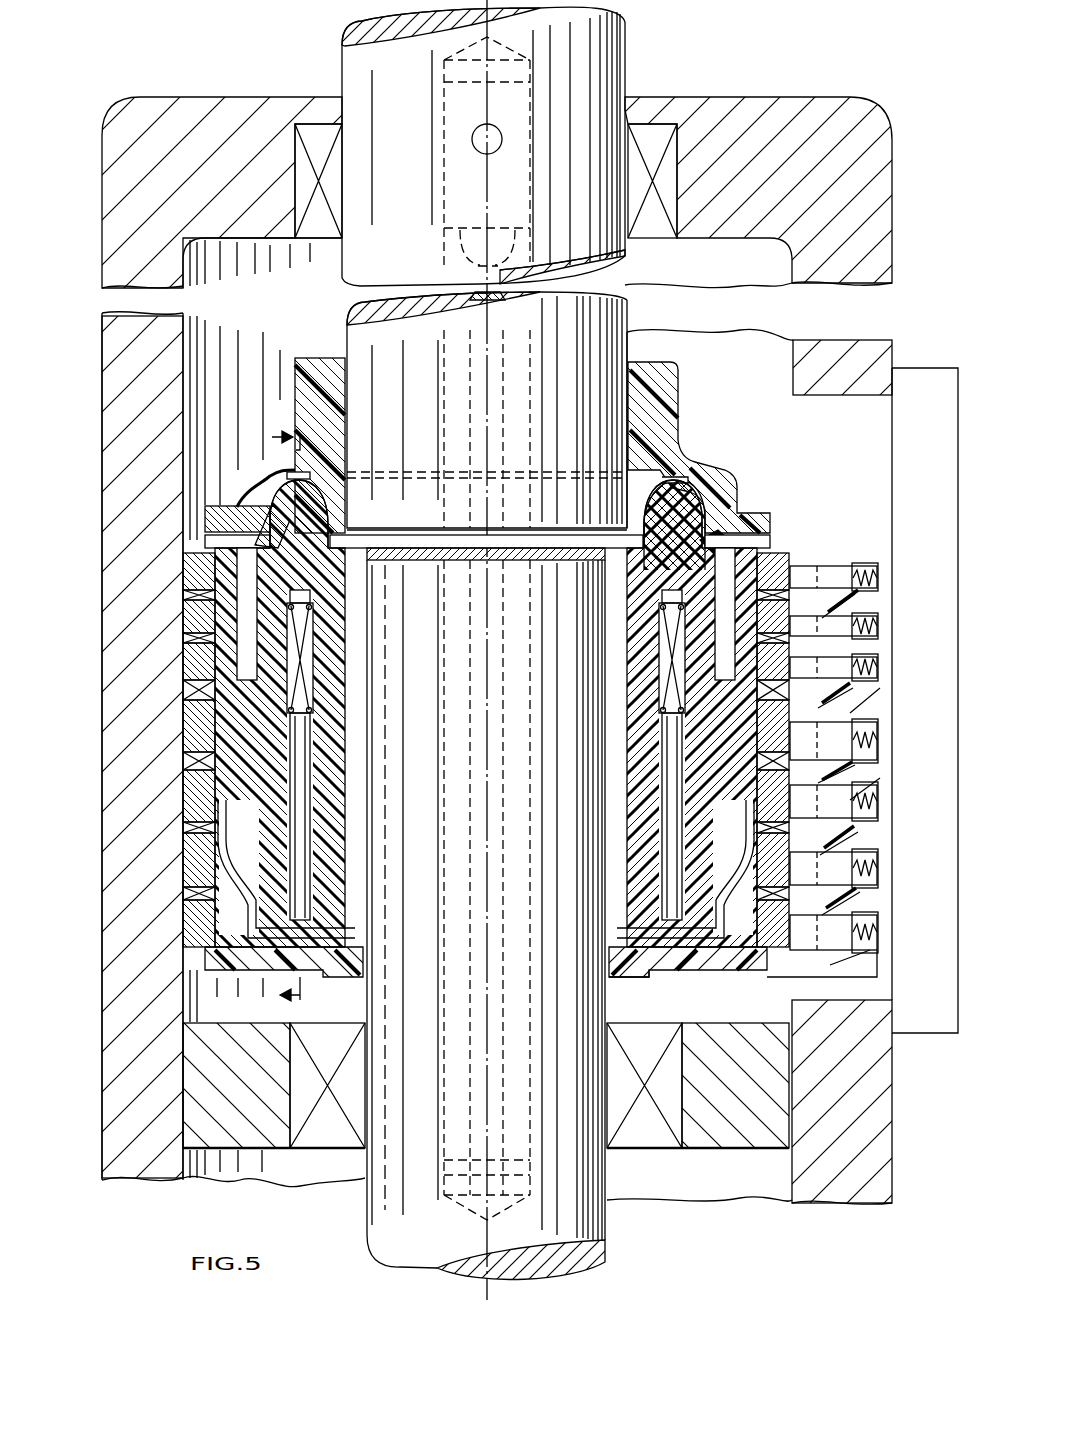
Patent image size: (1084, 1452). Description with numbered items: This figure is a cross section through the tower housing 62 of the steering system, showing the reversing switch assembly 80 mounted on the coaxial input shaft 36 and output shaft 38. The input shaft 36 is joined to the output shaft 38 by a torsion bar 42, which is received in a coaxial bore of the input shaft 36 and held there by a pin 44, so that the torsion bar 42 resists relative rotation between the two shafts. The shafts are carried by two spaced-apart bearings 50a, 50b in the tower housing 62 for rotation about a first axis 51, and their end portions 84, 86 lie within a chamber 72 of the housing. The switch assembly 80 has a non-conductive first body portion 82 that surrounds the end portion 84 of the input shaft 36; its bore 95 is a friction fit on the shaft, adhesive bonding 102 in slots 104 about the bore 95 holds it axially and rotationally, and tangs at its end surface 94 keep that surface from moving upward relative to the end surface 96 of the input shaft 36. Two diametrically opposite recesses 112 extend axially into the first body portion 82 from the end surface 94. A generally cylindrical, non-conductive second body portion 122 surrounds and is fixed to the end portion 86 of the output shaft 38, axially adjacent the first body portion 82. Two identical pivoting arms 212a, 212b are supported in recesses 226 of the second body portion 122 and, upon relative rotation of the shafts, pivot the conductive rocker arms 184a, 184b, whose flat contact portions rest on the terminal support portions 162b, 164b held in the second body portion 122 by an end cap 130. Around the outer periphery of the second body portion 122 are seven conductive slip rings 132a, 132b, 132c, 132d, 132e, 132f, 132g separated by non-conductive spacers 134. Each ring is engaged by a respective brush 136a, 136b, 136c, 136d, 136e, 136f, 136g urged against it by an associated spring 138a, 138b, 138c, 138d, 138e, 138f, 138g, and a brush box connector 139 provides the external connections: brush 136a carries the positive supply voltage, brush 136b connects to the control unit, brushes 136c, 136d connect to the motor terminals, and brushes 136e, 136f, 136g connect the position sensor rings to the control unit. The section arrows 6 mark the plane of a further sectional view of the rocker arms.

The section line 6 is at (279, 716).
The input shaft 36 is at (608, 60).
The output shaft 38 is at (402, 1230).
The torsion bar 42 is at (470, 296).
The pin 44 is at (472, 141).
The bearing 50a is at (660, 174).
The bearing 50b is at (647, 1133).
The first axis 51 is at (486, 14).
The tower housing 62 is at (782, 118).
The chamber 72 is at (276, 362).
The reversing switch assembly 80 is at (776, 453).
The first body portion 82 is at (668, 390).
The end portion 84 is at (632, 462).
The end portion 86 is at (420, 937).
The end surface 94 is at (233, 530).
The bore 95 is at (347, 457).
The end surface 96 is at (415, 545).
The adhesive bonding 102 is at (617, 463).
The slots 104 is at (640, 457).
The recesses 112 is at (317, 493).
The second body portion 122 is at (340, 770).
The end cap 130 is at (642, 972).
The conductor ring 132a is at (183, 925).
The conductor ring 132b is at (183, 858).
The conductor ring 132c is at (183, 785).
The conductor ring 132d is at (190, 720).
The conductor ring 132e is at (183, 662).
The conductor ring 132f is at (183, 618).
The conductor ring 132g is at (183, 570).
The spacers 134 is at (183, 596).
The brush 136a is at (828, 947).
The brush 136b is at (806, 870).
The brush 136c is at (834, 801).
The brush 136d is at (834, 741).
The brush 136e is at (834, 667).
The brush 136f is at (834, 626).
The brush 136g is at (807, 580).
The spring 138a is at (880, 940).
The spring 138b is at (875, 857).
The spring 138c is at (878, 795).
The spring 138d is at (878, 748).
The spring 138e is at (878, 680).
The spring 138f is at (878, 640).
The spring 138g is at (878, 592).
The brush box connector 139 is at (923, 1035).
The support portion 162b is at (277, 950).
The support portion 164b is at (678, 955).
The rocker arm 184a is at (324, 975).
The rocker arm 184b is at (705, 960).
The pivoting arm 212a is at (257, 523).
The pivoting arm 212b is at (722, 532).
The recesses 226 is at (357, 642).